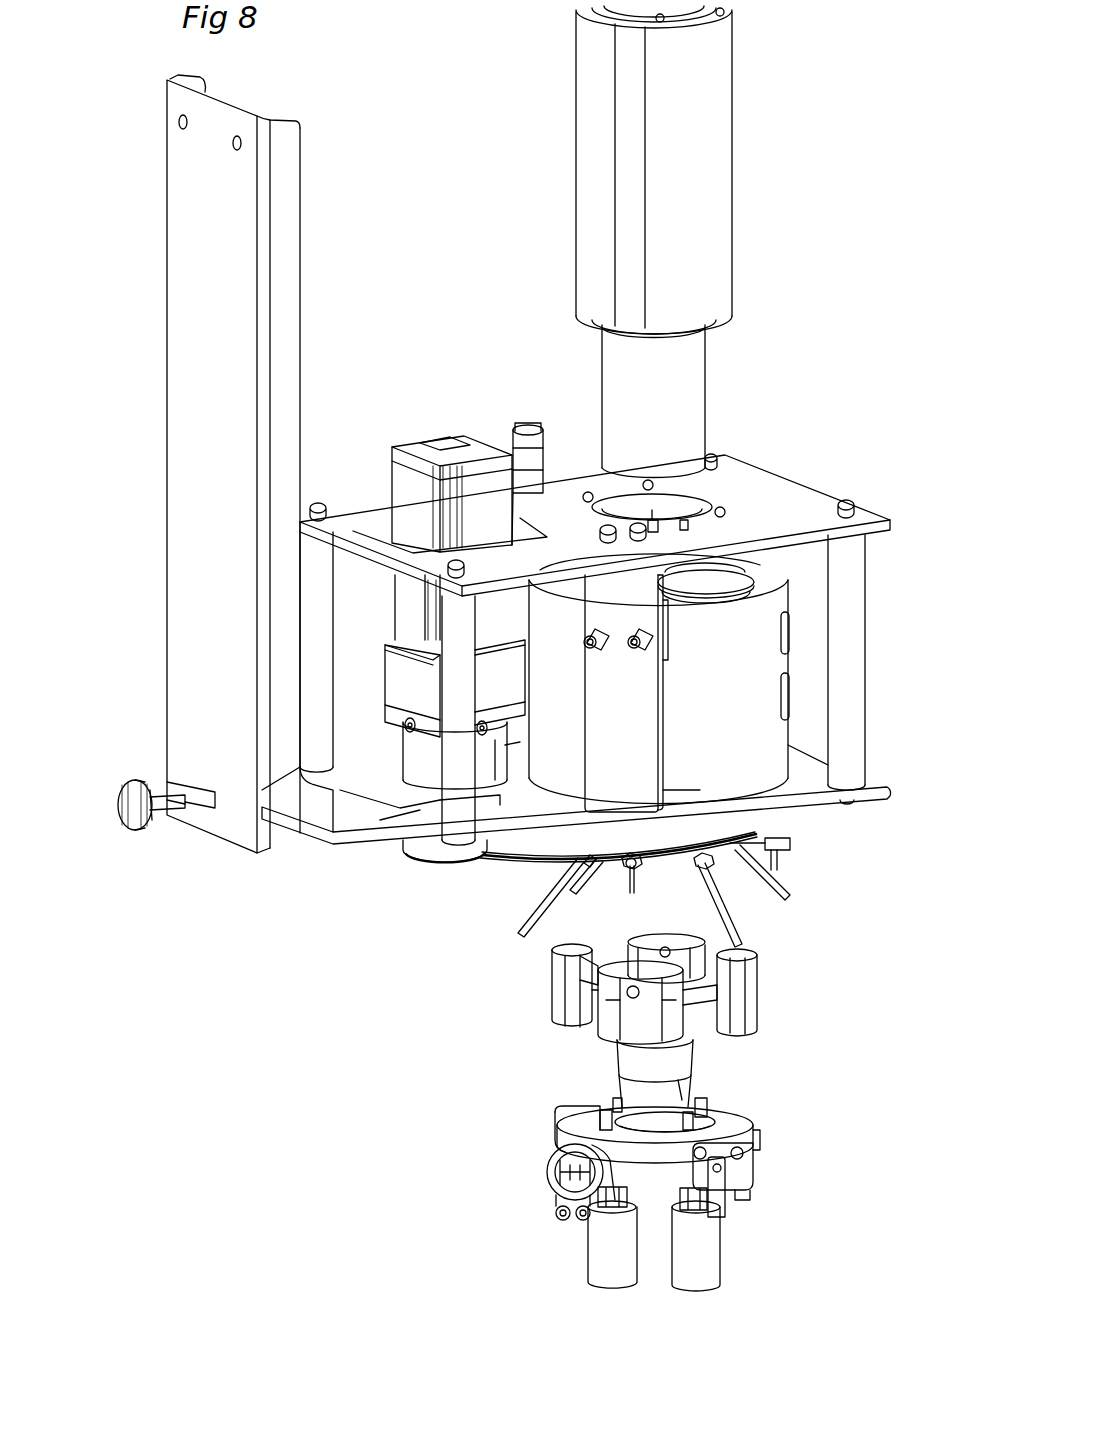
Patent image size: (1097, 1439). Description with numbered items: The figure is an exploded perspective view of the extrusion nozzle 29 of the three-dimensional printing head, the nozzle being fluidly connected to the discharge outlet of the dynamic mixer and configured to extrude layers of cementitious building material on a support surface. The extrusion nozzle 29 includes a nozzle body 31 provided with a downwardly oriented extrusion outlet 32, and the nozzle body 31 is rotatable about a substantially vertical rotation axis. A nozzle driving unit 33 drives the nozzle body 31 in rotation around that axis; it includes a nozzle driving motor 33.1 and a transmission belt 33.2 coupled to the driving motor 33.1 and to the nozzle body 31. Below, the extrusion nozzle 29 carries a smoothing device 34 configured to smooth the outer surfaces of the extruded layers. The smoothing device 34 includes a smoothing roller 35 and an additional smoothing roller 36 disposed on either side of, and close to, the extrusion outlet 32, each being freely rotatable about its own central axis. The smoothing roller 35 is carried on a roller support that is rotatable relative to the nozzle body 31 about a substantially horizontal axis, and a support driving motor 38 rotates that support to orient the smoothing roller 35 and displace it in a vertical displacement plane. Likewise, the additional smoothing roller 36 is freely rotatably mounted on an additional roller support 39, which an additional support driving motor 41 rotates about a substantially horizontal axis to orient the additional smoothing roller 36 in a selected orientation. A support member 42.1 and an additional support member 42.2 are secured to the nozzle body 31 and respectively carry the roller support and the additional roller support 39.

The extrusion nozzle 29 is at (580, 1196).
The nozzle body 31 is at (732, 990).
The extrusion outlet 32 is at (655, 1113).
The nozzle driving unit 33 is at (397, 860).
The nozzle driving motor 33.1 is at (400, 686).
The transmission belt 33.2 is at (560, 845).
The smoothing device 34 is at (657, 1274).
The smoothing roller 35 is at (603, 1257).
The additional smoothing roller 36 is at (702, 1257).
The support driving motor 38 is at (568, 1185).
The additional roller support 39 is at (713, 1185).
The additional support driving motor 41 is at (750, 1140).
The support member 42.1 is at (587, 1108).
The additional support member 42.2 is at (715, 1135).